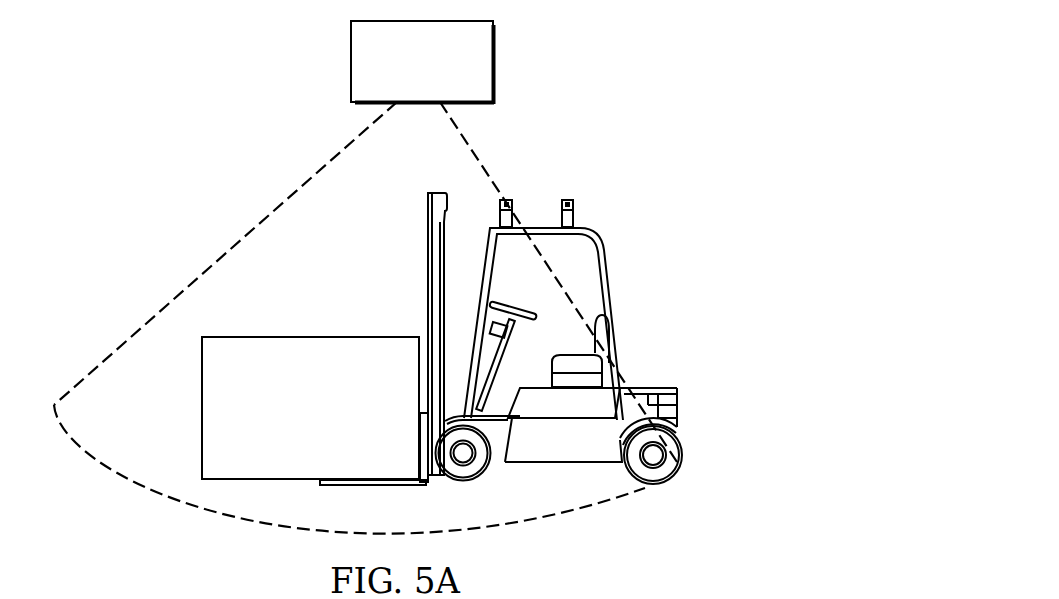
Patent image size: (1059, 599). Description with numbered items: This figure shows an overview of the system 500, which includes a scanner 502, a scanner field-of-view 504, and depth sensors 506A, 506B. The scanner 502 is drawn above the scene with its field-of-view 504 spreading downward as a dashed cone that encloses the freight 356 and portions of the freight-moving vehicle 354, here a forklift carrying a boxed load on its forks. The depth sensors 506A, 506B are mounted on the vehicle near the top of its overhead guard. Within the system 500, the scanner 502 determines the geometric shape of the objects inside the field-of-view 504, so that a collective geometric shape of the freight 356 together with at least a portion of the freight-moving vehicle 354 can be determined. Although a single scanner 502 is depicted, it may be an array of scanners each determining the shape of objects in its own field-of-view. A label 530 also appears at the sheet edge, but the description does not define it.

The system 500 is at (722, 30).
The scanner 502 is at (351, 60).
The scanner field-of-view 504 is at (226, 254).
The depth sensor 506A is at (498, 213).
The depth sensor 506B is at (574, 220).
The freight-moving vehicle 354 is at (677, 418).
The freight 356 is at (310, 337).
The reference item 530 is at (702, 593).